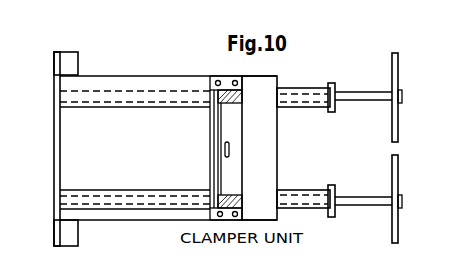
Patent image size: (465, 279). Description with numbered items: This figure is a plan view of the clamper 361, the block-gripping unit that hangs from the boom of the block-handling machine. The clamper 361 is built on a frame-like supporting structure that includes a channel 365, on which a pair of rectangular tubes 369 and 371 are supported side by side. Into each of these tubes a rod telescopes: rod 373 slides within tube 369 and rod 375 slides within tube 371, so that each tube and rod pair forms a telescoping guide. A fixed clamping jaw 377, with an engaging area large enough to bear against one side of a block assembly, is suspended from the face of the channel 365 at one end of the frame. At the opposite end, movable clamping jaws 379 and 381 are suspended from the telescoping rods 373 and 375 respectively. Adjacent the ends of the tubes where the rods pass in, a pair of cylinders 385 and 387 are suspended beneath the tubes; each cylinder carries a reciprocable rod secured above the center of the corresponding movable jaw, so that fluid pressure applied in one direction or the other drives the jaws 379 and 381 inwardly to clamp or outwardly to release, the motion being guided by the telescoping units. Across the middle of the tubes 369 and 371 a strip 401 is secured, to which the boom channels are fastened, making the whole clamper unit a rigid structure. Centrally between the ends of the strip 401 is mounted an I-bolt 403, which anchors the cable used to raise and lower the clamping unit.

The fixed clamping jaw 377 is at (53, 157).
The channel 365 is at (72, 237).
The rectangular tube 371 is at (137, 108).
The rectangular tube 369 is at (115, 192).
The clamper 361 is at (160, 155).
The strip 401 is at (241, 127).
The I-bolt 403 is at (228, 155).
The cylinder 387 is at (289, 89).
The rod 375 is at (370, 91).
The movable clamping jaw 381 is at (398, 112).
The cylinder 385 is at (295, 190).
The rod 373 is at (378, 197).
The movable clamping jaw 379 is at (402, 200).